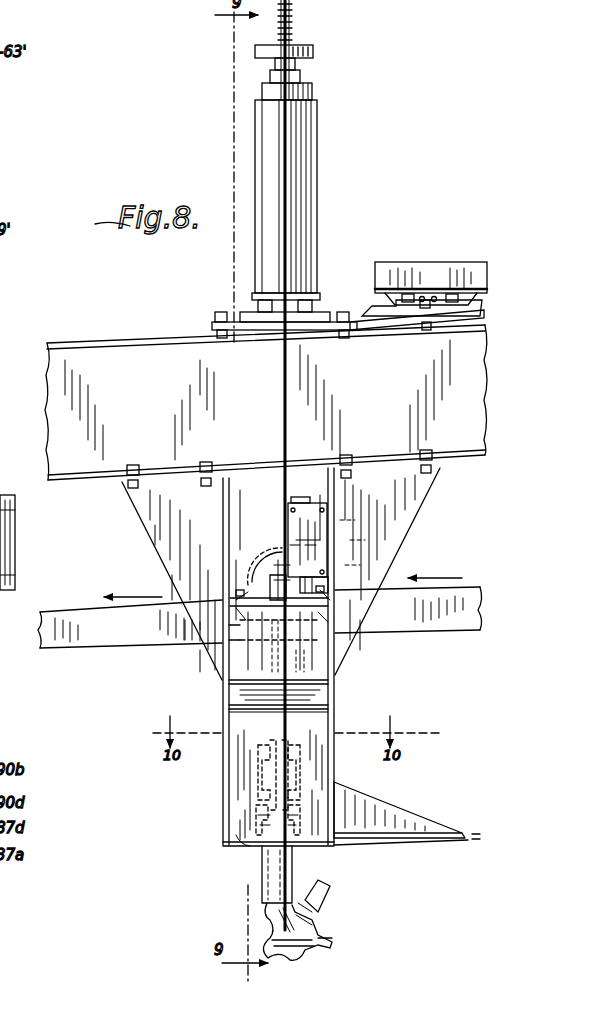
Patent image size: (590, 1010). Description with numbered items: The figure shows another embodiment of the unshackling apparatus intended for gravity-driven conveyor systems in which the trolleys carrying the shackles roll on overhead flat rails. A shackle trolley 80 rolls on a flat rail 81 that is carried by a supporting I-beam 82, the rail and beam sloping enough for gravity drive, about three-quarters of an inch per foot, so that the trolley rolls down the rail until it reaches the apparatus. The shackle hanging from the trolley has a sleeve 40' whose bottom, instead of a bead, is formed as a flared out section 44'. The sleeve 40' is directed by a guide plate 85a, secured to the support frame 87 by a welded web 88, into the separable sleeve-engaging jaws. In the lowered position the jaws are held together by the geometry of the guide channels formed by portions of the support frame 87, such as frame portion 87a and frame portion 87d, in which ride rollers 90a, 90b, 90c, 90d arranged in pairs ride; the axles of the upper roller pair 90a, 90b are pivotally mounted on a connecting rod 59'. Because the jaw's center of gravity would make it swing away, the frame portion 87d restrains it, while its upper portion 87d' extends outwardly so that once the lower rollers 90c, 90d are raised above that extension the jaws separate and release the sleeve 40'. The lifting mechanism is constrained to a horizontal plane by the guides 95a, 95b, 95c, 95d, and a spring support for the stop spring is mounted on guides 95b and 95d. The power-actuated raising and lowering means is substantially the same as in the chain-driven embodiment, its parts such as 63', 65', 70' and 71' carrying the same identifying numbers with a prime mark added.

The connecting rod 59' is at (312, 465).
The collar 63' is at (306, 57).
The cylinder 65' is at (284, 204).
The control box 70' is at (418, 276).
The supporting I-beam 82 is at (40, 406).
The switch unit 71' is at (26, 542).
The support frame 87 is at (220, 816).
The frame portion 87a is at (335, 722).
The upper portion of frame portion 87d' is at (125, 667).
The frame portion 87d is at (216, 853).
The guide 95c is at (212, 636).
The guide 95a is at (347, 665).
The guide 95b is at (372, 630).
The guide 95d is at (240, 596).
The flat rail 81 is at (60, 648).
The shackle trolley 80 is at (290, 660).
The ride roller 90a is at (294, 745).
The ride roller 90b is at (262, 744).
The ride roller 90c is at (296, 805).
The ride roller 90d is at (262, 805).
The welded web 88 is at (383, 813).
The guide plate 85a is at (412, 843).
The sleeve of the shackle 40' is at (255, 874).
The flared out section 44' is at (269, 920).